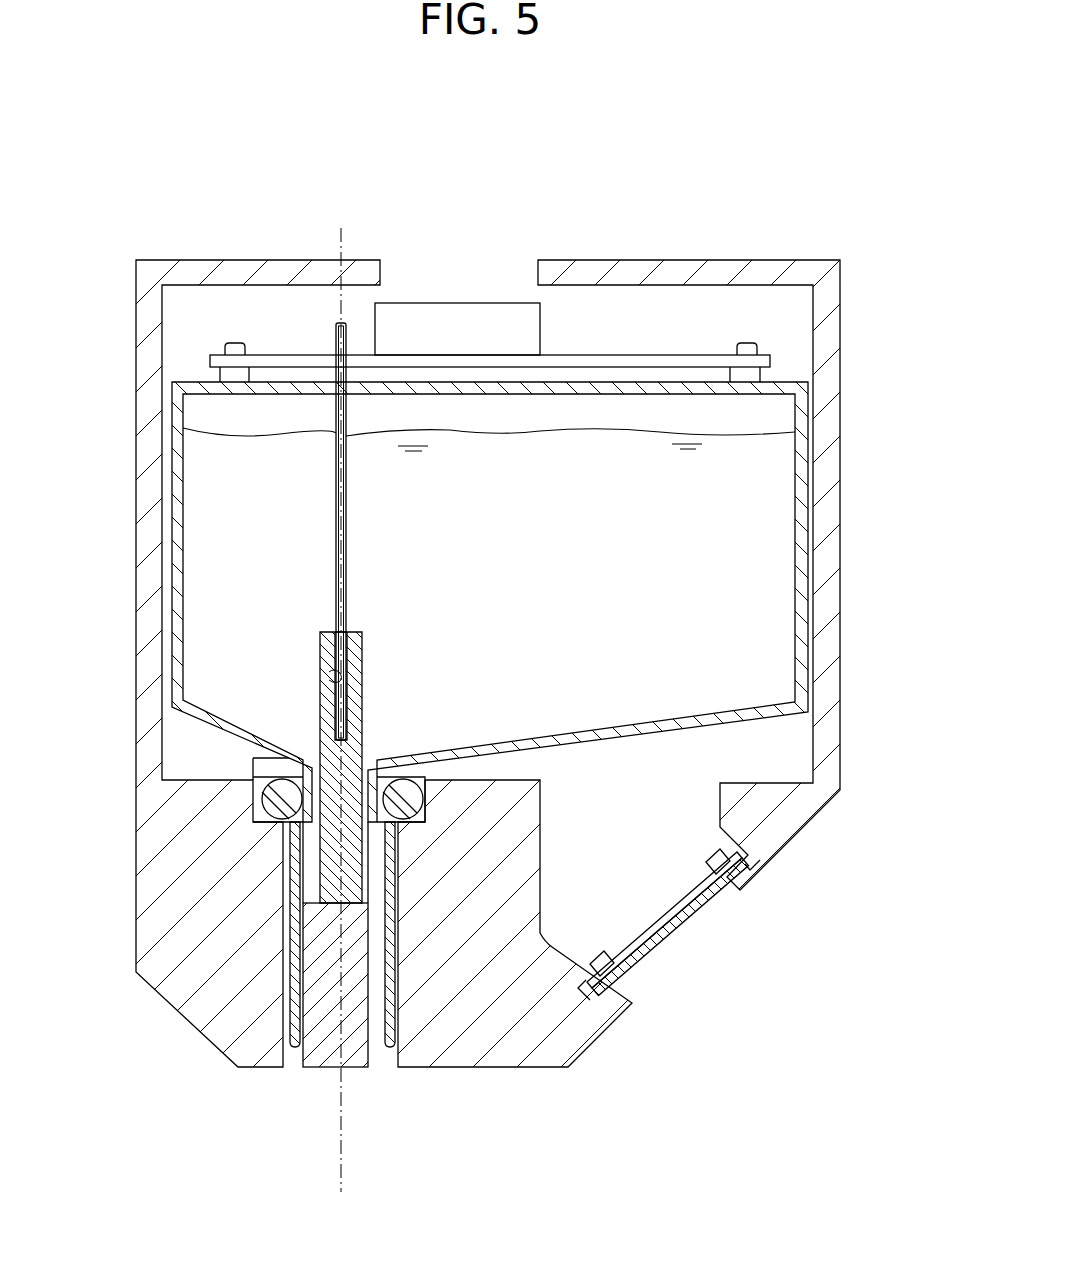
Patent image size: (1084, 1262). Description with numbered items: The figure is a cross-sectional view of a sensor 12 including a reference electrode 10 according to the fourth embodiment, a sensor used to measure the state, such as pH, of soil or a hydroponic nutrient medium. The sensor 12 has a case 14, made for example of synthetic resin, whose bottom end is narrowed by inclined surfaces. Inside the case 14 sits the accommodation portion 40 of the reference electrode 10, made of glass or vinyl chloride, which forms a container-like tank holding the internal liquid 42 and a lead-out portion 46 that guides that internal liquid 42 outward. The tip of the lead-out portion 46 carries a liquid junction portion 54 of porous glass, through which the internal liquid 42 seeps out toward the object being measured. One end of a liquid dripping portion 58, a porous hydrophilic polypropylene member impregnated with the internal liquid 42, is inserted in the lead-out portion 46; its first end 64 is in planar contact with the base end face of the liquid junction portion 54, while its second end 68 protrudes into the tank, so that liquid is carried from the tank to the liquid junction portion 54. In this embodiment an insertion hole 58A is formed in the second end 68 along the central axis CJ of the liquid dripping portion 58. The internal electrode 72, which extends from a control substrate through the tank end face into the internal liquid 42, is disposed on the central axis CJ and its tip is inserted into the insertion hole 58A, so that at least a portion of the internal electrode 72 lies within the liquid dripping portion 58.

The reference electrode 10 is at (580, 330).
The sensor 12 is at (646, 116).
The case 14 is at (842, 317).
The accommodation portion 40 is at (172, 468).
The internal liquid 42 is at (767, 517).
The lead-out portion 46 is at (305, 848).
The liquid junction portion 54 is at (300, 1068).
The liquid dripping portion 58 is at (364, 631).
The insertion hole 58A is at (333, 676).
The first end 64 is at (315, 937).
The second end 68 is at (352, 632).
The internal electrode 72 is at (335, 528).
The central axis CJ is at (345, 1150).